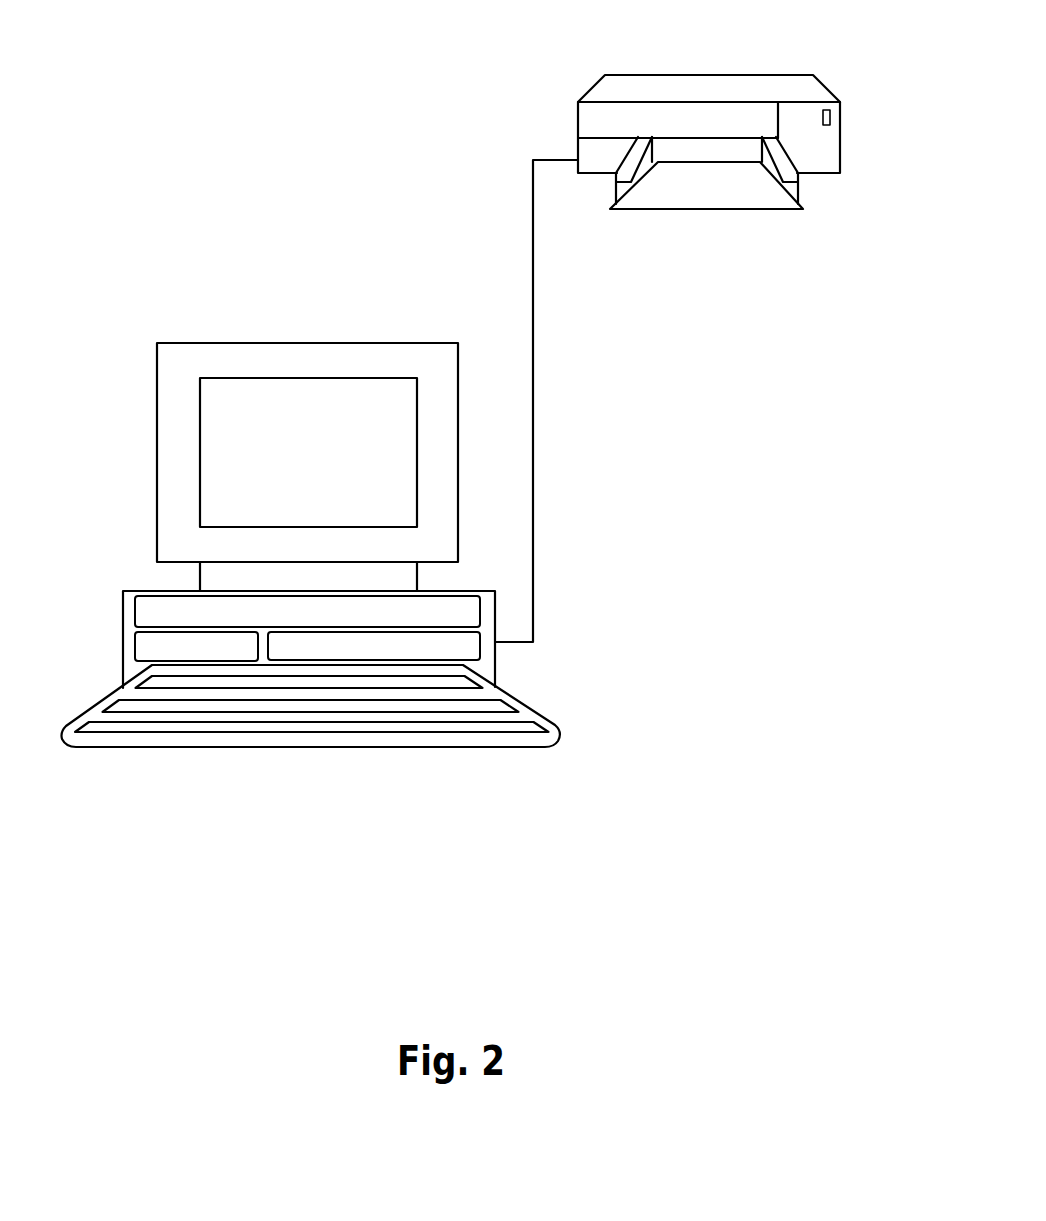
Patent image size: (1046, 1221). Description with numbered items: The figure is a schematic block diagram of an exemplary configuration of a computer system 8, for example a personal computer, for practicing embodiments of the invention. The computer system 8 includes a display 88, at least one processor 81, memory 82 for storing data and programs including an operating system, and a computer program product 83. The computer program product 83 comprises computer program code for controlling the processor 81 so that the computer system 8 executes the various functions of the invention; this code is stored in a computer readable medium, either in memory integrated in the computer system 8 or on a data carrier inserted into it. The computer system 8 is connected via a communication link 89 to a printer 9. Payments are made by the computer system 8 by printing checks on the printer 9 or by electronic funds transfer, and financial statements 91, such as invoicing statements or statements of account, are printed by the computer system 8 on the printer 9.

The computer system 8 is at (343, 610).
The printer 9 is at (591, 89).
The processor 81 is at (135, 648).
The memory 82 is at (480, 653).
The computer program product 83 is at (135, 608).
The display 88 is at (198, 433).
The communication link 89 is at (533, 232).
The financial statement 91 is at (747, 209).